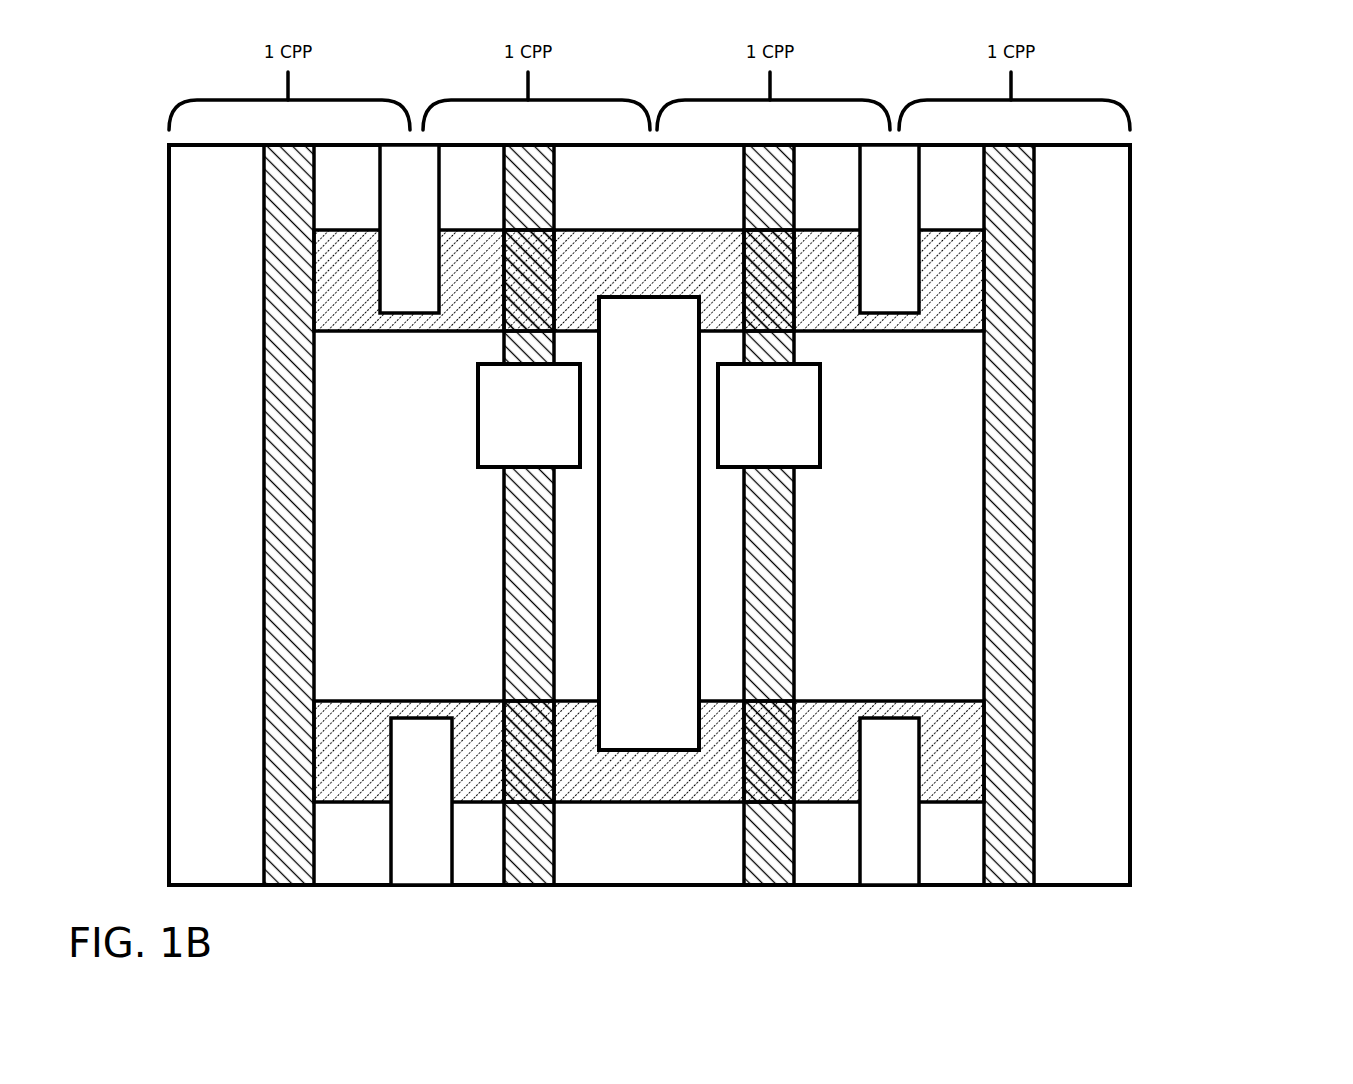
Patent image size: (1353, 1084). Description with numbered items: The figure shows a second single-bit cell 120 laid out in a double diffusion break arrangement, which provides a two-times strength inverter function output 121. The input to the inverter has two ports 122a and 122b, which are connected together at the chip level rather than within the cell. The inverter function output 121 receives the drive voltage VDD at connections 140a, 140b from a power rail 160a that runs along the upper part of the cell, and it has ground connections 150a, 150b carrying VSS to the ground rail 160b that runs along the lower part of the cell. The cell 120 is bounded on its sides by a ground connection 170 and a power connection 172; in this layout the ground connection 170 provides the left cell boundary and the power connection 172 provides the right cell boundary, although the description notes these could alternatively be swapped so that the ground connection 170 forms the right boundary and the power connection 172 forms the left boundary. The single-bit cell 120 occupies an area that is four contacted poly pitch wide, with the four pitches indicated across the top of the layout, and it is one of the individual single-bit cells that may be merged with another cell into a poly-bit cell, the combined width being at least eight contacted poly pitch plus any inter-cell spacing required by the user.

The second single-bit cell 120 is at (1240, 257).
The inverter function output 121 is at (649, 523).
The port of input 122a is at (529, 415).
The port of input 122b is at (769, 415).
The connection 140a is at (415, 232).
The connection 140b is at (898, 232).
The ground connection 150a is at (421, 873).
The ground connection 150b is at (888, 867).
The power rail 160a is at (685, 231).
The ground rail 160b is at (463, 701).
The ground connection 170 is at (290, 516).
The power connection 172 is at (1017, 480).